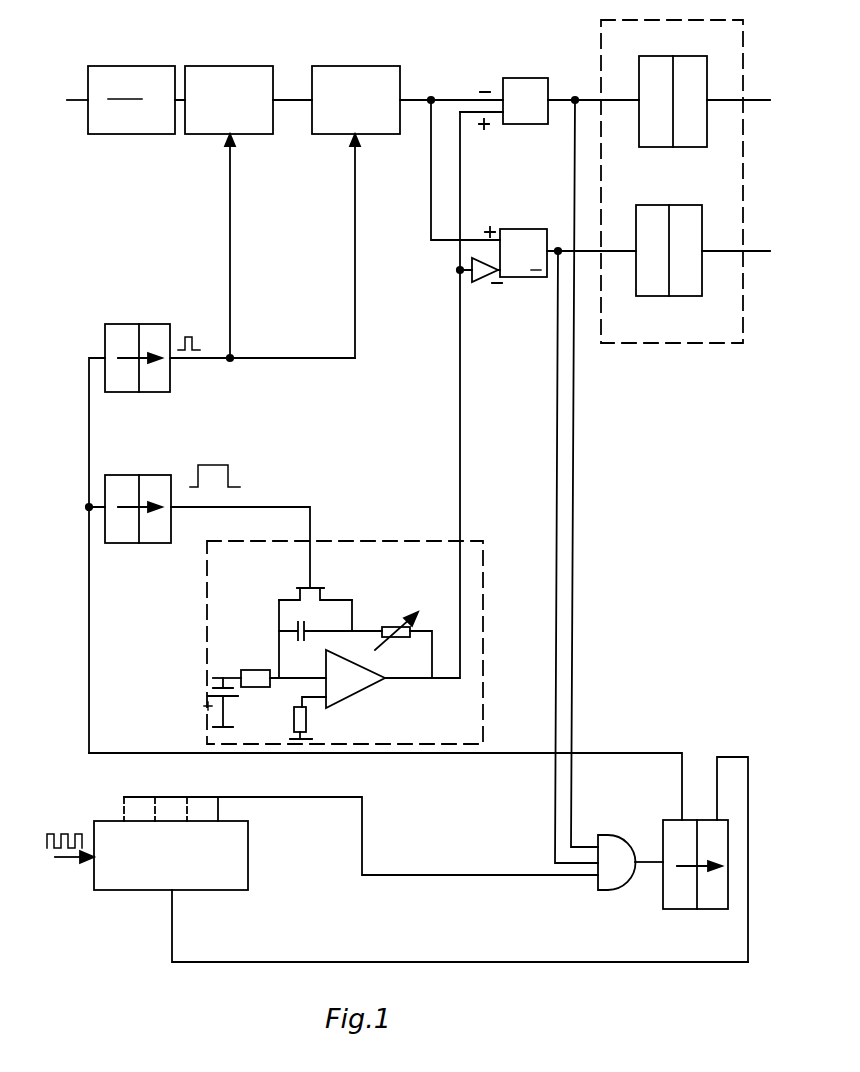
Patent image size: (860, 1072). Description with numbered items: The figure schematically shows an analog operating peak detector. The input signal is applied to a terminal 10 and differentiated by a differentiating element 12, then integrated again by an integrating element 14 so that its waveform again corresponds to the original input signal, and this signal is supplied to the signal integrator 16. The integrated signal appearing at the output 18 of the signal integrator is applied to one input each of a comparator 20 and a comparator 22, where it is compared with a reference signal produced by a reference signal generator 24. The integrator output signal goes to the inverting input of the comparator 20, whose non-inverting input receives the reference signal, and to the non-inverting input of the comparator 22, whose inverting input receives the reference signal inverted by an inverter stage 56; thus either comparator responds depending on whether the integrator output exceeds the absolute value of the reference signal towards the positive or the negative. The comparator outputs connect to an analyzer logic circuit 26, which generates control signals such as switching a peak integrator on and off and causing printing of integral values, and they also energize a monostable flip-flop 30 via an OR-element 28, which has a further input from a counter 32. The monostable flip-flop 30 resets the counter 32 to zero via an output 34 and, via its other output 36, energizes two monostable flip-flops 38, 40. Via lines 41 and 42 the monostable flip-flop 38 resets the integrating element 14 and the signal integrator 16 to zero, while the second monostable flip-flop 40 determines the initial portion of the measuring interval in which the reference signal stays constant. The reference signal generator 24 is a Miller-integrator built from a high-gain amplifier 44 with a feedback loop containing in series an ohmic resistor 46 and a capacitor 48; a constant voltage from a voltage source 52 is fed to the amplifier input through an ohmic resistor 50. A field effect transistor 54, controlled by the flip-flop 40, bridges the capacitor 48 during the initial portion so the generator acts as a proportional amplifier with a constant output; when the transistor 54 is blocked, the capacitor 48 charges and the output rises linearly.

The terminal 10 is at (73, 100).
The differentiating element 12 is at (133, 70).
The integrating element 14 is at (230, 70).
The signal integrator 16 is at (353, 72).
The output of the signal integrator 18 is at (423, 105).
The comparator 20 is at (528, 78).
The comparator 22 is at (525, 237).
The reference signal generator 24 is at (353, 541).
The analyzer logic circuit 26 is at (673, 343).
The OR-element 28 is at (608, 840).
The monostable flip-flop 30 is at (683, 903).
The counter 32 is at (248, 857).
The output 34 is at (733, 757).
The other output 36 is at (683, 785).
The monostable flip-flop 38 is at (145, 328).
The second monostable flip-flop 40 is at (130, 480).
The line 41 is at (230, 218).
The line 42 is at (355, 243).
The high-gain amplifier 44 is at (353, 687).
The ohmic resistor 46 is at (398, 637).
The capacitor 48 is at (300, 640).
The ohmic resistor 50 is at (253, 668).
The voltage source 52 is at (232, 697).
The field effect transistor 54 is at (313, 587).
The inverter stage 56 is at (478, 282).